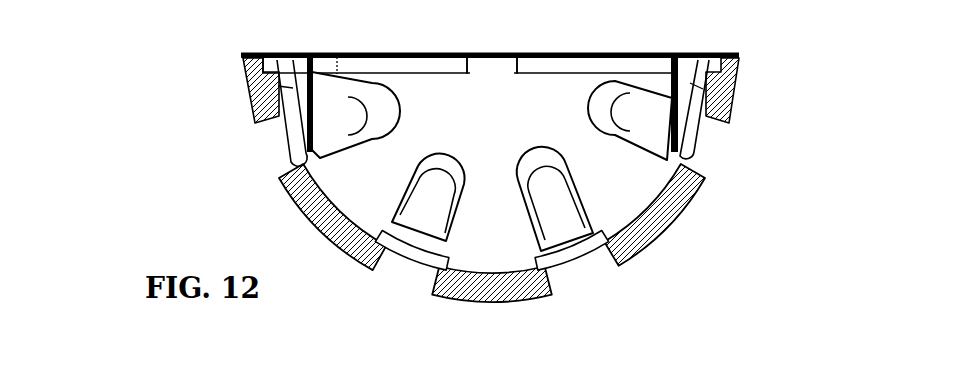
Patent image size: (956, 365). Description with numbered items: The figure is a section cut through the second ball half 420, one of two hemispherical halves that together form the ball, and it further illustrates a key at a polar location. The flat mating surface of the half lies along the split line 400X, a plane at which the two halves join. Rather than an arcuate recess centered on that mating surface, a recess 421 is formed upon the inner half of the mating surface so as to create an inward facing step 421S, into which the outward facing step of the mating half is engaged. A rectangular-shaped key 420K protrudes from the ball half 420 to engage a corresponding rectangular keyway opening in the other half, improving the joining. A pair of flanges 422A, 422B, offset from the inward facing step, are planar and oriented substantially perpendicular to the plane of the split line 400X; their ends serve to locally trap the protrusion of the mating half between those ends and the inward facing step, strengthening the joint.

The split line 400X is at (230, 57).
The second ball half 420 is at (693, 229).
The key 420K is at (489, 63).
The recess 421 is at (717, 58).
The inward facing step 421S is at (299, 52).
The flange 422A is at (735, 107).
The flange 422B is at (252, 108).